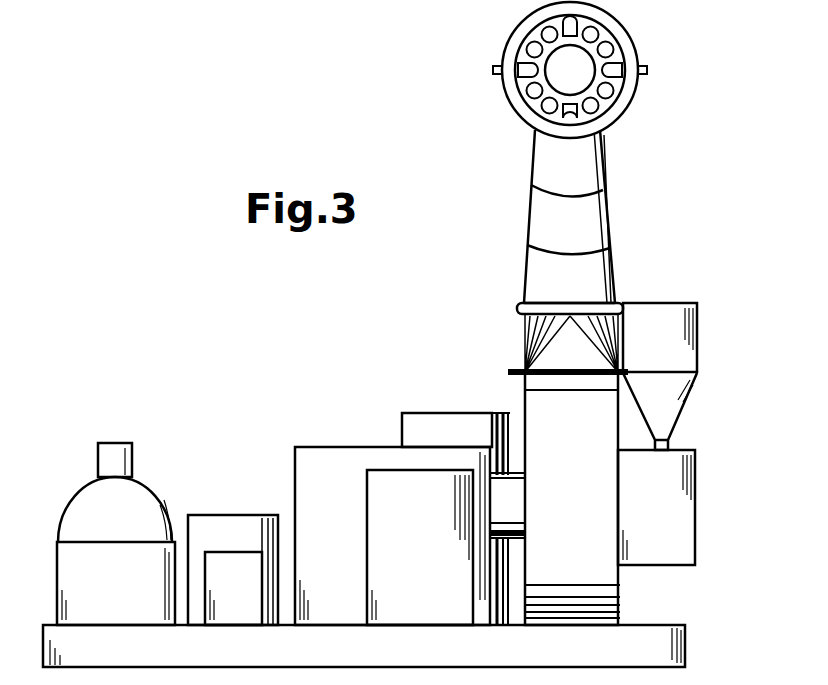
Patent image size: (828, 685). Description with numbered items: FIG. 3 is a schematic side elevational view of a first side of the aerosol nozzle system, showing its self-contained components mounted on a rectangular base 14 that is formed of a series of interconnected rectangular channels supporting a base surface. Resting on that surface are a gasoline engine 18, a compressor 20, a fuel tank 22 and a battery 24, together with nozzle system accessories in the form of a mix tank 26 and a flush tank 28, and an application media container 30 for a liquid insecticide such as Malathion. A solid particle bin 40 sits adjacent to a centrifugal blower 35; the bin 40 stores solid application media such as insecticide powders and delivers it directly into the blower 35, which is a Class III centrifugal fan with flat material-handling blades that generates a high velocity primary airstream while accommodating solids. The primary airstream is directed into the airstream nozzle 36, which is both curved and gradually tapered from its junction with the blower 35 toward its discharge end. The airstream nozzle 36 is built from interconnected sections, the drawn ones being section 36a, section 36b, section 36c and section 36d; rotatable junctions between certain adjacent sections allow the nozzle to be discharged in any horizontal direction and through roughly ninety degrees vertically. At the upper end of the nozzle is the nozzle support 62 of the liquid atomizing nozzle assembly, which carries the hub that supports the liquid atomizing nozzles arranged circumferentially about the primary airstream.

The rectangular base 14 is at (400, 660).
The gasoline engine 18 is at (342, 528).
The compressor 20 is at (432, 527).
The fuel tank 22 is at (125, 602).
The battery 24 is at (250, 600).
The mix tank 26 is at (457, 447).
The flush tank 28 is at (125, 541).
The container 30 is at (237, 548).
The centrifugal blower 35 is at (670, 513).
The airstream nozzle 36 is at (620, 220).
The airstream nozzle section 36a is at (557, 355).
The airstream nozzle section 36b is at (590, 290).
The airstream nozzle section 36c is at (588, 240).
The airstream nozzle section 36d is at (590, 187).
The solid particle bin 40 is at (672, 345).
The nozzle support 62 is at (633, 27).